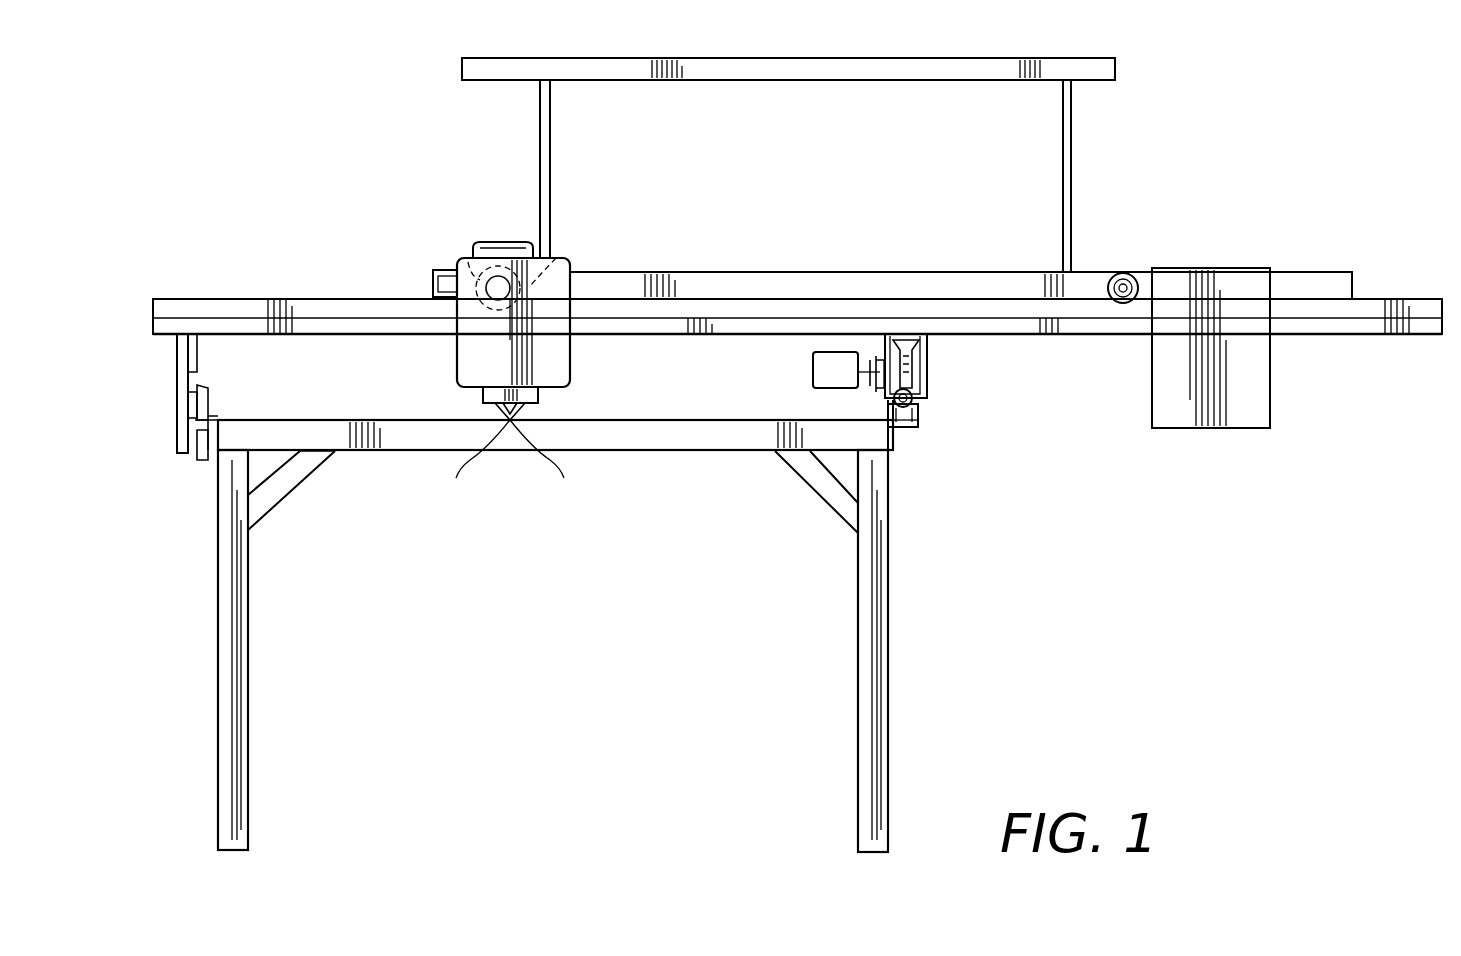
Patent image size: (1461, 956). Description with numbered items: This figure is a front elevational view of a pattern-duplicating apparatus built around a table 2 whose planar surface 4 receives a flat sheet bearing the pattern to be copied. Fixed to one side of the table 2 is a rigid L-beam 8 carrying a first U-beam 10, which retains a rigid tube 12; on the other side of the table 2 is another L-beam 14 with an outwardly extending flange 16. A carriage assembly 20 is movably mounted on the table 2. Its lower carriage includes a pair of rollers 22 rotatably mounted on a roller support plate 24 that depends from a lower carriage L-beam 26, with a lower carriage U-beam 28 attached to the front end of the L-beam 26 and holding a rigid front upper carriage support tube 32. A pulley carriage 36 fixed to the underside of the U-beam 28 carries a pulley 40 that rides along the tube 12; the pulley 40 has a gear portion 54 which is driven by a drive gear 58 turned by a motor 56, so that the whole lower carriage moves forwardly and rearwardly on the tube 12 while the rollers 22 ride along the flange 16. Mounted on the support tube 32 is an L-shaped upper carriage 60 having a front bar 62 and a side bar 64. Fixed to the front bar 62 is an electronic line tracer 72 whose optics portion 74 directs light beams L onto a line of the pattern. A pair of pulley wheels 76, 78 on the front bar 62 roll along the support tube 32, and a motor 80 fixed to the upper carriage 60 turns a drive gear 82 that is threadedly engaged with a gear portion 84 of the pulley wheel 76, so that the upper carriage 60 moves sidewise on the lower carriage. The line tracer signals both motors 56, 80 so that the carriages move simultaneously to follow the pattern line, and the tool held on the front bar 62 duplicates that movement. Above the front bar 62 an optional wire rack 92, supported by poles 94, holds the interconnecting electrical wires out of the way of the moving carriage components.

The table 2 is at (218, 578).
The planar surface 4 is at (405, 418).
The L-beam 8 is at (893, 445).
The first U-beam 10 is at (916, 408).
The rigid tube 12 is at (905, 428).
The L-beam 14 is at (208, 440).
The flange 16 is at (210, 420).
The carriage assembly 20 is at (130, 162).
The rollers 22 is at (204, 388).
The roller support plate 24 is at (178, 411).
The lower carriage L-beam 26 is at (165, 340).
The lower carriage U-beam 28 is at (785, 335).
The front upper carriage support tube 32 is at (236, 298).
The pulley carriage 36 is at (928, 380).
The pulley 40 is at (912, 362).
The gear portion 54 is at (880, 362).
The motor 56 is at (850, 384).
The drive gear 58 is at (872, 388).
The upper carriage 60 is at (757, 272).
The front bar 62 is at (640, 272).
The side bar 64 is at (433, 283).
The electronic line tracer 72 is at (466, 262).
The optics portion 74 is at (540, 396).
The pulley wheel 76 is at (470, 262).
The pulley wheel 78 is at (1120, 272).
The motor 80 is at (522, 255).
The drive gear 82 is at (504, 256).
The gear portion 84 is at (560, 250).
The wire rack 92 is at (903, 58).
The poles 94 is at (550, 136).
The light beams L is at (500, 453).